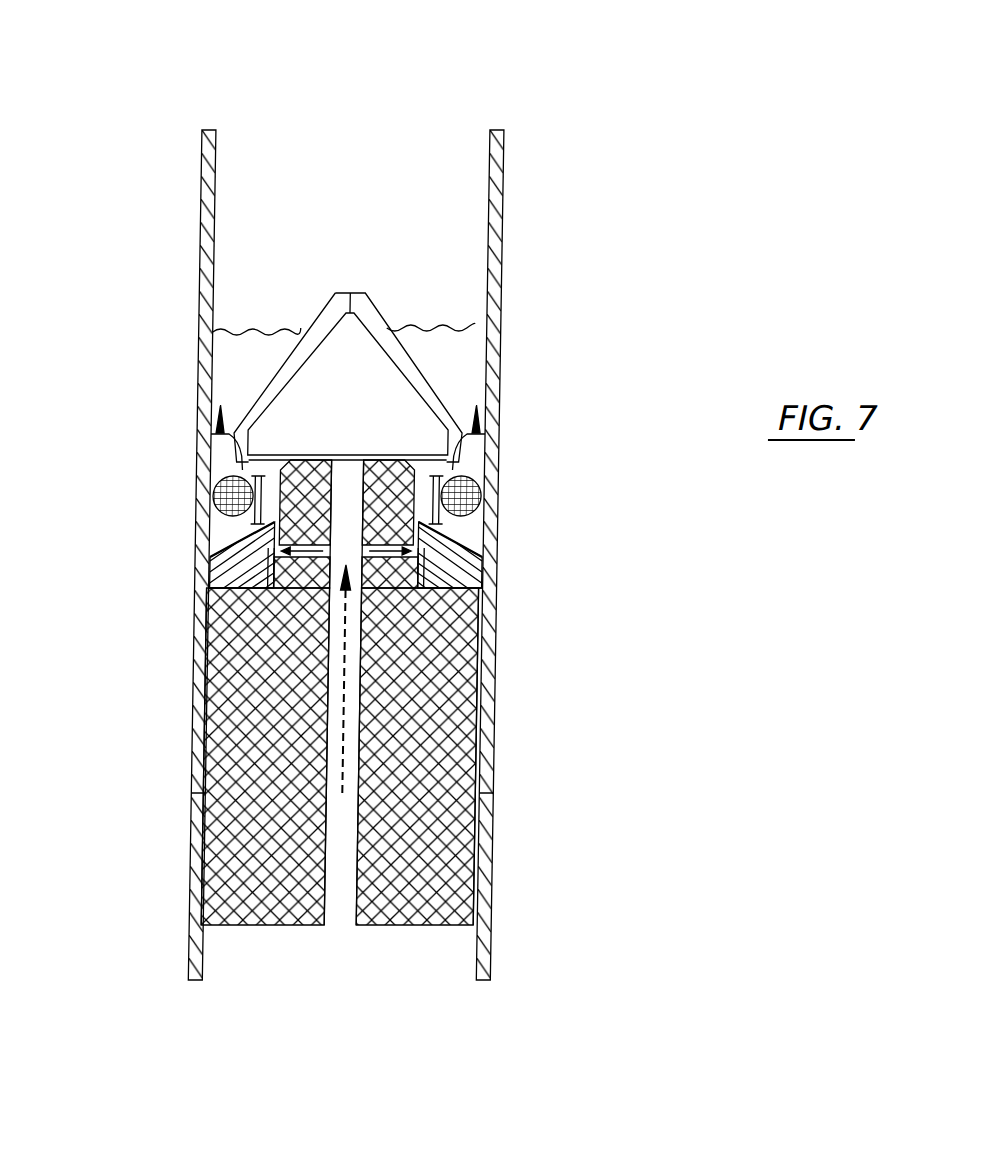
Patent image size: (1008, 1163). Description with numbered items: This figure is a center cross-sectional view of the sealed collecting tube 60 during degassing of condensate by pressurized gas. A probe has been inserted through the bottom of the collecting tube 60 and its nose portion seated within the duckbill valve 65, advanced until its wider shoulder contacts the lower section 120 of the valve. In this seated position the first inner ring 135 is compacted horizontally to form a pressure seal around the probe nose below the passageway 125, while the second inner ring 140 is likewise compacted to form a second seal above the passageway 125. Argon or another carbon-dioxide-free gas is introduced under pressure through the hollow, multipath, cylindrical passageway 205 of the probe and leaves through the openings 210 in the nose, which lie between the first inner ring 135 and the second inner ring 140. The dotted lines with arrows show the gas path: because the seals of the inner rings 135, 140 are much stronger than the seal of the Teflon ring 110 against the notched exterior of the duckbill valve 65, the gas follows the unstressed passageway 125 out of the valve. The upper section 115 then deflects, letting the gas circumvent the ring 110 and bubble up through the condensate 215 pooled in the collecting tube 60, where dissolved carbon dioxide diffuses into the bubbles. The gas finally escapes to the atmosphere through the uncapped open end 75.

The collecting tube 60 is at (509, 176).
The duckbill valve 65 is at (430, 356).
The open end 75 is at (356, 130).
The condensate 215 is at (238, 371).
The upper section 115 is at (230, 441).
The Teflon ring 110 is at (224, 495).
The passageway 125 is at (240, 527).
The second inner ring 140 is at (247, 552).
The lower section 120 is at (233, 570).
The openings 210 is at (203, 594).
The first inner ring 135 is at (203, 625).
The passageway 205 is at (359, 923).